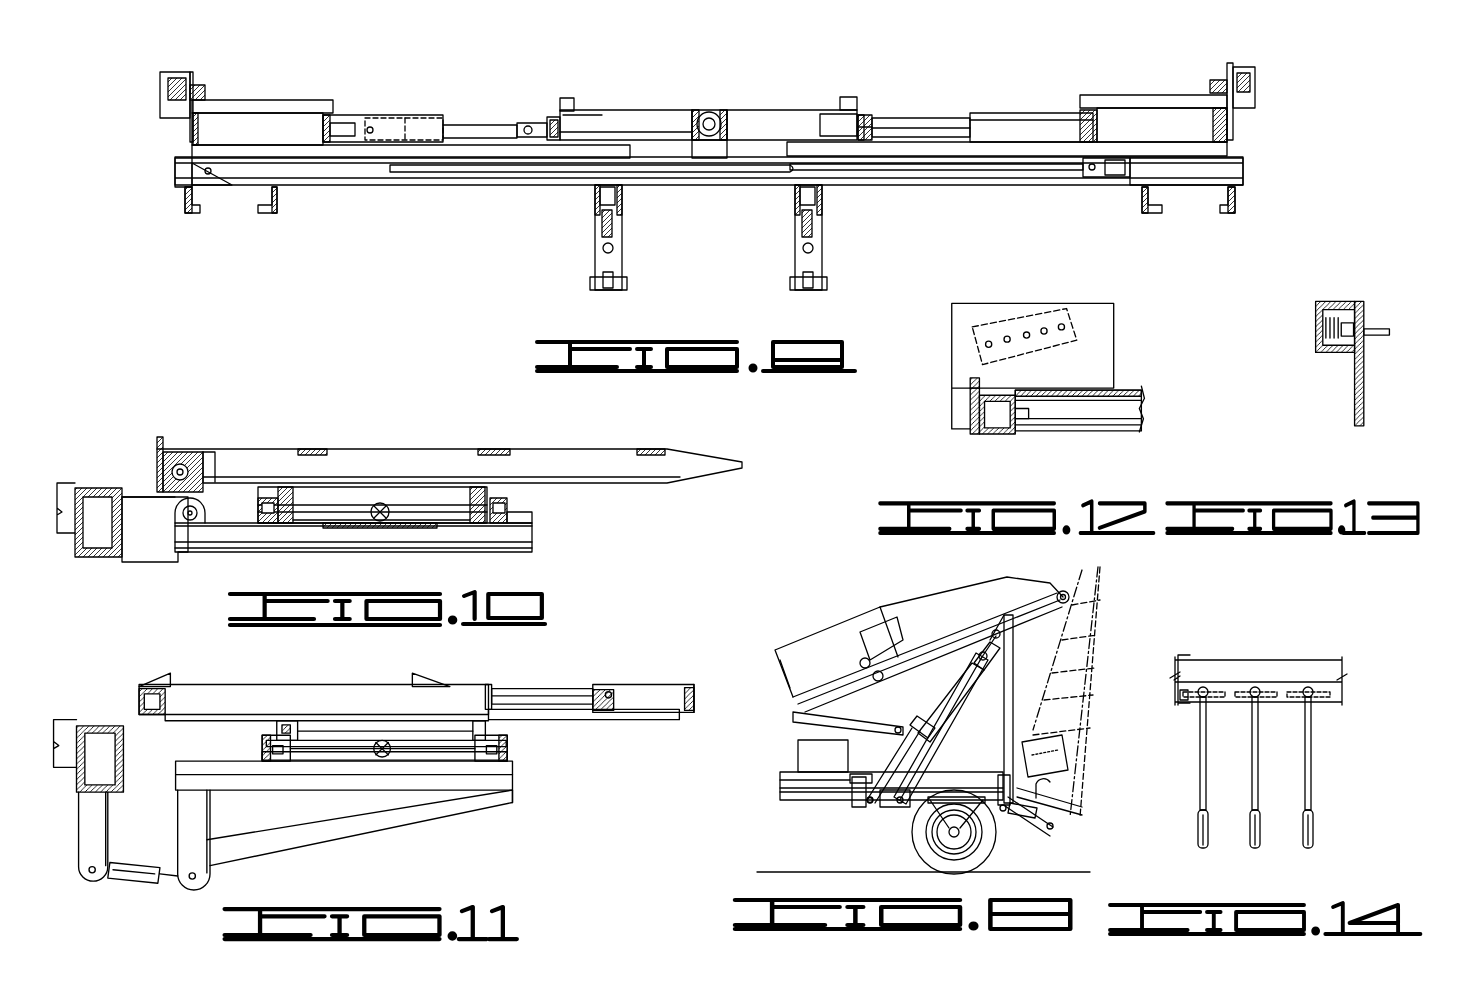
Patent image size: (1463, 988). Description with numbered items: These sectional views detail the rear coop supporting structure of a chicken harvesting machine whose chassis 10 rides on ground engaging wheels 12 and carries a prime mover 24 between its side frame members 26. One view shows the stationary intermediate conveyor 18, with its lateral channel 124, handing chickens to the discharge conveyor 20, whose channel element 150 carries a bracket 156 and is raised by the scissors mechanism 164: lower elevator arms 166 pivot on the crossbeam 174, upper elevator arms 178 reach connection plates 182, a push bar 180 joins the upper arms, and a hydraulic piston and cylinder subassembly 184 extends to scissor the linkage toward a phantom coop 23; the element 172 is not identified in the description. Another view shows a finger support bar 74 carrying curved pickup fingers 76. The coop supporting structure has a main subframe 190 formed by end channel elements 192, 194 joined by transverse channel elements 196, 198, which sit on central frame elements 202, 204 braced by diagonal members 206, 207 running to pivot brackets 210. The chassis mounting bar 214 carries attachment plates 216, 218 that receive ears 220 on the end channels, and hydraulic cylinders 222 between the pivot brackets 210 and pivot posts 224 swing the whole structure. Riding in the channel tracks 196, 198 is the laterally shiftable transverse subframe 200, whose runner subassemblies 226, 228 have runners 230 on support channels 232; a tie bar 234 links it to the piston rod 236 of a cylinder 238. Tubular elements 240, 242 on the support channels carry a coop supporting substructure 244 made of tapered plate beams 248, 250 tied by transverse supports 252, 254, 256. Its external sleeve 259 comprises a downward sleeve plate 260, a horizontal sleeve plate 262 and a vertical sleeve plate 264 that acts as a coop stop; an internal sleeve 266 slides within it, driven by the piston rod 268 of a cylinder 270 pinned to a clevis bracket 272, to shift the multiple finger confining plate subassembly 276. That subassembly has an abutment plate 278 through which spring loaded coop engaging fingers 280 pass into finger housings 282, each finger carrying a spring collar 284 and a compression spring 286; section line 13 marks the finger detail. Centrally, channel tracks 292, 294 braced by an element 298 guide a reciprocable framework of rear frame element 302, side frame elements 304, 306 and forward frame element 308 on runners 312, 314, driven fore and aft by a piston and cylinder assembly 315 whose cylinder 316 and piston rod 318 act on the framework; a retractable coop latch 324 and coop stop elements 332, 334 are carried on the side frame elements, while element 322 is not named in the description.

In FIG. 10, the main frame or chassis 10 is at (70, 483).
In FIG. 11, the main frame or chassis 10 is at (77, 705).
In FIG. 8, the ground engaging wheels 12 is at (925, 845).
In FIG. 12, the section line 13 is at (1008, 290).
In FIG. 8, the stationary intermediate conveyor subassembly 18 is at (813, 632).
In FIG. 8, the discharge conveyor subassembly 20 is at (962, 583).
In FIG. 8, the two-tiered, multiple bin coop 23 is at (1105, 610).
In FIG. 8, the prime mover 24 is at (840, 766).
In FIG. 8, the side frame members 26 is at (820, 785).
In FIG. 14, the finger support bar 74 is at (1272, 662).
In FIG. 14, the pickup fingers 76 is at (1205, 800).
In FIG. 8, the channel 124 is at (822, 683).
In FIG. 8, the channel element 150 is at (978, 630).
In FIG. 8, the supporting bracket 156 is at (870, 693).
In FIG. 8, the hydraulically powered scissors-linkage or mechanism 164 is at (928, 690).
In FIG. 8, the lower elevator arms 166 is at (946, 705).
In FIG. 8, the link 172 is at (868, 773).
In FIG. 8, the crossbeam 174 is at (850, 792).
In FIG. 8, the upper elevator arms 178 is at (989, 658).
In FIG. 8, the push bar 180 is at (988, 670).
In FIG. 8, the connection plate 182 is at (1000, 636).
In FIG. 8, the hydraulic piston and cylinder subassembly 184 is at (950, 748).
In FIG. 9, the main subframe 190 is at (185, 203).
In FIG. 10, the main subframe 190 is at (545, 550).
In FIG. 11, the main subframe 190 is at (500, 760).
In FIG. 9, the end channel element 192 is at (276, 208).
In FIG. 8, the end channel element 192 is at (1072, 800).
In FIG. 9, the end channel element 194 is at (1148, 206).
In FIG. 9, the transverse channel element 196 is at (1244, 166).
In FIG. 10, the transverse channel element 196 is at (262, 525).
In FIG. 11, the transverse channel element 196 is at (254, 738).
In FIG. 10, the transverse channel element 198 is at (508, 511).
In FIG. 11, the transverse channel element 198 is at (490, 741).
In FIG. 10, the laterally shiftable transverse subframe 200 is at (312, 495).
In FIG. 11, the laterally shiftable transverse subframe 200 is at (302, 727).
In FIG. 9, the central frame element 202 is at (595, 192).
In FIG. 11, the central frame element 202 is at (318, 780).
In FIG. 9, the central frame element 204 is at (825, 190).
In FIG. 9, the diagonal brace member 206 is at (600, 250).
In FIG. 11, the diagonal brace member 206 is at (308, 836).
In FIG. 9, the diagonal brace member 207 is at (825, 245).
In FIG. 9, the downwardly projecting pivot bracket 210 is at (623, 256).
In FIG. 11, the downwardly projecting pivot bracket 210 is at (189, 808).
In FIG. 10, the mounting bar 214 is at (95, 558).
In FIG. 11, the mounting bar 214 is at (122, 748).
In FIG. 8, the mounting bar 214 is at (996, 812).
In FIG. 8, the attachment plate 216 is at (1056, 812).
In FIG. 10, the attachment plate 218 is at (153, 563).
In FIG. 10, the ear 220 is at (198, 515).
In FIG. 11, the hydraulic piston and cylinder assemblies 222 is at (122, 872).
In FIG. 8, the hydraulic piston and cylinder assemblies 222 is at (1025, 825).
In FIG. 11, the pivot posts 224 is at (92, 820).
In FIG. 10, the runner subassembly 226 is at (300, 515).
In FIG. 11, the runner subassembly 226 is at (410, 748).
In FIG. 11, the runner subassembly 228 is at (300, 745).
In FIG. 10, the runners 230 is at (276, 525).
In FIG. 11, the runners 230 is at (262, 750).
In FIG. 10, the support channels 232 is at (470, 505).
In FIG. 11, the support channels 232 is at (410, 682).
In FIG. 11, the tie bar 234 is at (385, 768).
In FIG. 9, the piston rod 236 is at (1000, 170).
In FIG. 9, the cylinder 238 is at (325, 172).
In FIG. 10, the cylinder 238 is at (382, 502).
In FIG. 11, the cylinder 238 is at (362, 752).
In FIG. 10, the tubular element 240 is at (272, 488).
In FIG. 11, the tubular element 240 is at (274, 718).
In FIG. 10, the tubular element 242 is at (478, 488).
In FIG. 11, the tubular element 242 is at (456, 727).
In FIG. 10, the coop supporting substructure 244 is at (716, 447).
In FIG. 9, the plate beam 248 is at (198, 131).
In FIG. 12, the plate beam 248 is at (1082, 410).
In FIG. 9, the plate beam 250 is at (325, 128).
In FIG. 10, the plate beam 250 is at (688, 466).
In FIG. 10, the transverse support element 252 is at (654, 449).
In FIG. 10, the transverse support element 254 is at (492, 449).
In FIG. 12, the transverse support element 256 is at (992, 420).
In FIG. 10, the transverse support element 256 is at (312, 449).
In FIG. 12, the external sleeve 259 is at (968, 412).
In FIG. 10, the external sleeve 259 is at (270, 445).
In FIG. 12, the downwardly extending sleeve plate 260 is at (1022, 416).
In FIG. 10, the downwardly extending sleeve plate 260 is at (210, 468).
In FIG. 10, the horizontally extending external sleeve plate 262 is at (165, 505).
In FIG. 9, the vertically extending sleeve plate 264 is at (280, 100).
In FIG. 12, the vertically extending sleeve plate 264 is at (968, 383).
In FIG. 10, the vertically extending sleeve plate 264 is at (158, 452).
In FIG. 10, the internal sleeve 266 is at (182, 455).
In FIG. 9, the piston rod 268 is at (387, 118).
In FIG. 10, the piston rod 268 is at (172, 452).
In FIG. 9, the cylinder 270 is at (475, 140).
In FIG. 9, the clevis bracket 272 is at (530, 122).
In FIG. 13, the multiple finger confining plate subassembly 276 is at (1323, 296).
In FIG. 9, the lateral abutment plate 278 is at (193, 76).
In FIG. 12, the lateral abutment plate 278 is at (1098, 320).
In FIG. 13, the lateral abutment plate 278 is at (1345, 385).
In FIG. 8, the lateral abutment plate 278 is at (1062, 757).
In FIG. 9, the retractable coop engaging fingers 280 is at (206, 91).
In FIG. 12, the retractable coop engaging fingers 280 is at (1028, 332).
In FIG. 13, the retractable coop engaging fingers 280 is at (1362, 327).
In FIG. 9, the finger housing 282 is at (160, 89).
In FIG. 12, the finger housing 282 is at (990, 322).
In FIG. 13, the finger housing 282 is at (1305, 320).
In FIG. 13, the spring collar 284 is at (1355, 344).
In FIG. 13, the compression spring 286 is at (1320, 346).
In FIG. 9, the channel track 292 is at (547, 118).
In FIG. 9, the channel track 294 is at (868, 115).
In FIG. 11, the channel track 294 is at (645, 716).
In FIG. 9, the bracing element 298 is at (340, 122).
In FIG. 11, the rear frame element 302 is at (731, 700).
In FIG. 9, the side frame element 304 is at (577, 128).
In FIG. 9, the side frame element 306 is at (845, 128).
In FIG. 11, the side frame element 306 is at (632, 695).
In FIG. 9, the forward frame element 308 is at (777, 131).
In FIG. 9, the runner 312 is at (550, 140).
In FIG. 9, the runner 314 is at (866, 118).
In FIG. 9, the piston and cylinder assembly 315 is at (700, 108).
In FIG. 9, the cylinder 316 is at (710, 112).
In FIG. 11, the cylinder 316 is at (473, 690).
In FIG. 11, the piston rod 318 is at (550, 690).
In FIG. 11, the pin 322 is at (590, 712).
In FIG. 11, the retractable coop latch 324 is at (152, 682).
In FIG. 9, the coop stop element 332 is at (575, 103).
In FIG. 9, the coop stop element 334 is at (848, 100).